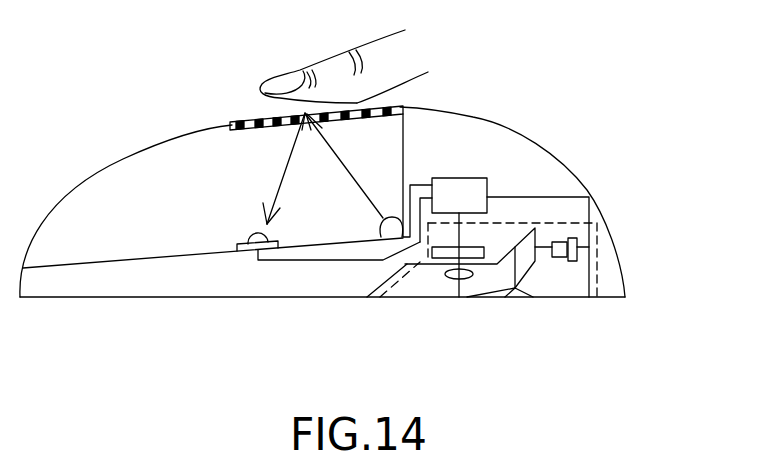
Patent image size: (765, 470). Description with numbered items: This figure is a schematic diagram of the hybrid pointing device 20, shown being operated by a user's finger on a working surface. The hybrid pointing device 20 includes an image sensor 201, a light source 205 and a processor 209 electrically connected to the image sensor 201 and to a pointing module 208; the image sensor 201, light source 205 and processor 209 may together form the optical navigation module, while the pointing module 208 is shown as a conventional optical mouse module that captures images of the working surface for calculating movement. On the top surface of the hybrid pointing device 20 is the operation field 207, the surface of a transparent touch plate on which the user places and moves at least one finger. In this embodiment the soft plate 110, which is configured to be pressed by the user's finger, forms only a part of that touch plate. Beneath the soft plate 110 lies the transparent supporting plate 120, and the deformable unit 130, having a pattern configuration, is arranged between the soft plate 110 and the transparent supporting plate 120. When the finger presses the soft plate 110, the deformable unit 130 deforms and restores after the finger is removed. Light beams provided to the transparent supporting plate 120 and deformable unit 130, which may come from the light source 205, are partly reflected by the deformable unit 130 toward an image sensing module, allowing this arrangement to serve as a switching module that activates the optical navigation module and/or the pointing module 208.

The hybrid pointing device 20 is at (645, 48).
The soft plate 110 is at (262, 119).
The transparent supporting plate 120 is at (281, 124).
The deformable unit 130 is at (238, 123).
The image sensor 201 is at (247, 243).
The light source 205 is at (380, 225).
The operation field 207 is at (185, 132).
The pointing module 208 is at (597, 268).
The processor 209 is at (472, 178).